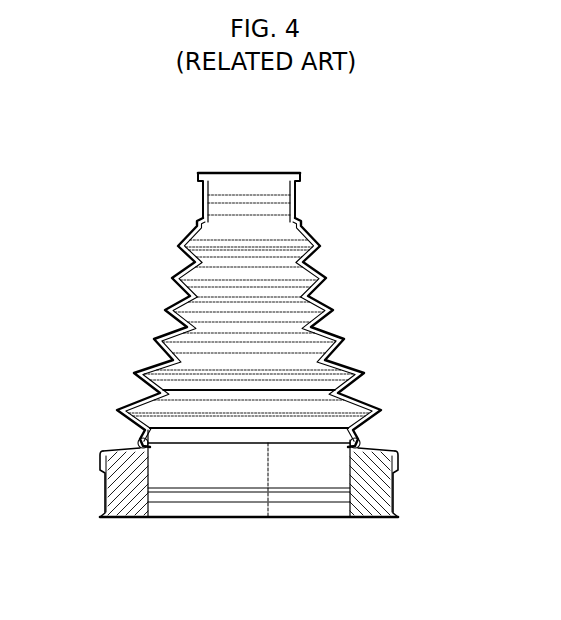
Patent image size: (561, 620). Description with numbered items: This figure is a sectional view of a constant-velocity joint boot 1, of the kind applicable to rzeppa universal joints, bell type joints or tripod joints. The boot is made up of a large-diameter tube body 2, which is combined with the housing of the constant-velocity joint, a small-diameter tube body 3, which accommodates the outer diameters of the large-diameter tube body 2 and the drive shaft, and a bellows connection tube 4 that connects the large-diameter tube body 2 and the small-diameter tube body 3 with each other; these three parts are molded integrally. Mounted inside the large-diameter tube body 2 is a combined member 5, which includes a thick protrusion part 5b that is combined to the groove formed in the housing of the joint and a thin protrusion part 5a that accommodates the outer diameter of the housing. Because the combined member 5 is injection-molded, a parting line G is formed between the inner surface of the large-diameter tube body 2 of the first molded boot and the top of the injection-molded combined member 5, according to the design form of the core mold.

The constant-velocity joint boot 1 is at (269, 339).
The large-diameter tube body 2 is at (397, 493).
The small-diameter tube body 3 is at (297, 193).
The bellows connection tube 4 is at (349, 340).
The combined member 5 is at (249, 527).
The thin protrusion part 5a is at (372, 495).
The thick protrusion part 5b is at (148, 500).
The parting line G is at (141, 463).